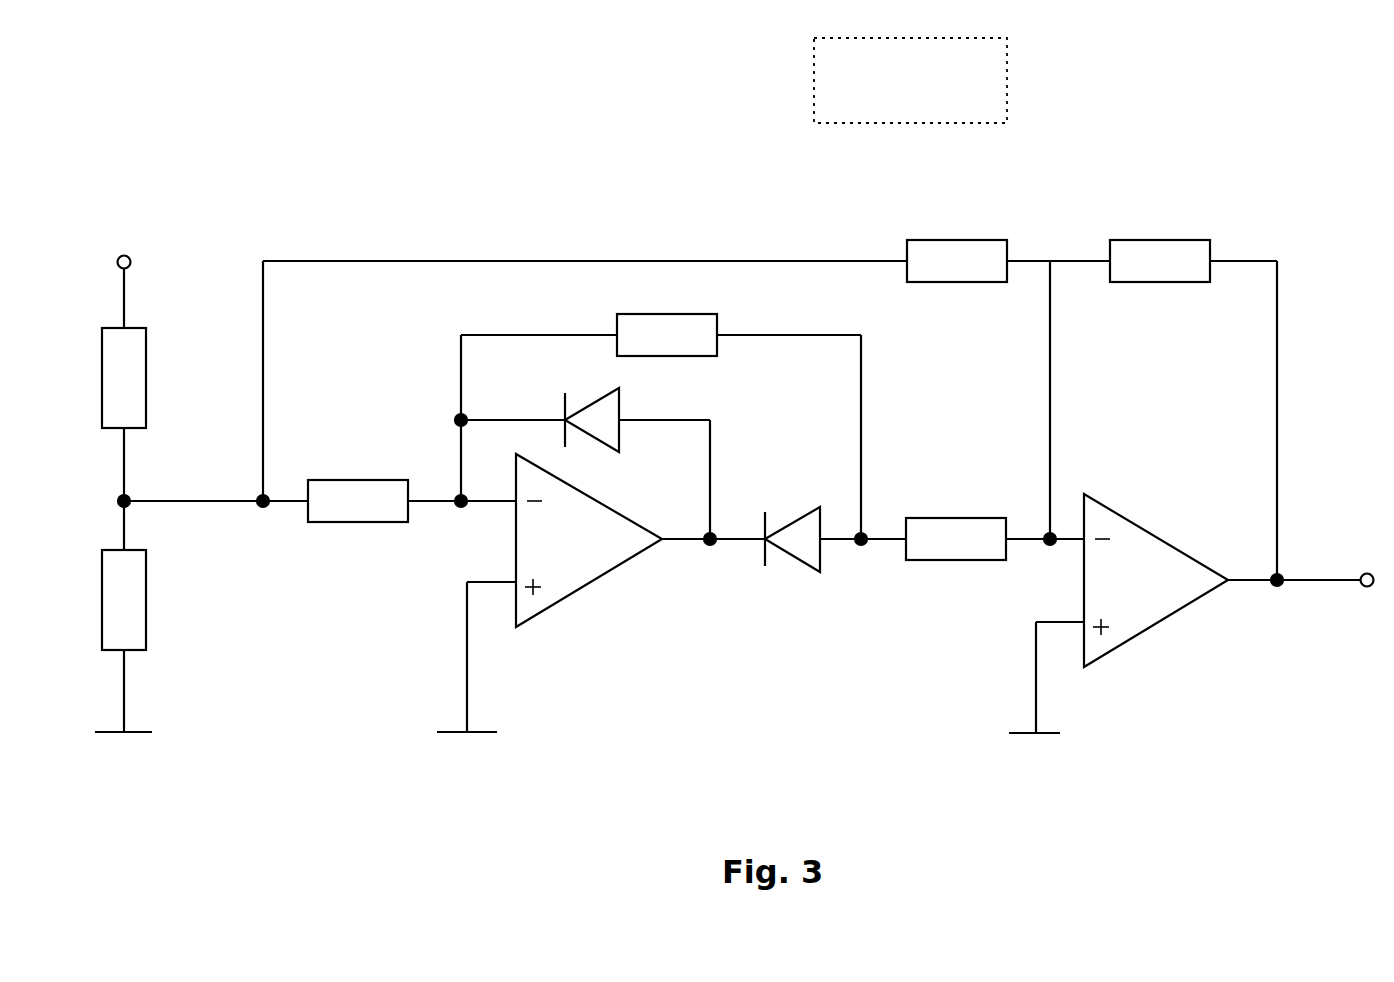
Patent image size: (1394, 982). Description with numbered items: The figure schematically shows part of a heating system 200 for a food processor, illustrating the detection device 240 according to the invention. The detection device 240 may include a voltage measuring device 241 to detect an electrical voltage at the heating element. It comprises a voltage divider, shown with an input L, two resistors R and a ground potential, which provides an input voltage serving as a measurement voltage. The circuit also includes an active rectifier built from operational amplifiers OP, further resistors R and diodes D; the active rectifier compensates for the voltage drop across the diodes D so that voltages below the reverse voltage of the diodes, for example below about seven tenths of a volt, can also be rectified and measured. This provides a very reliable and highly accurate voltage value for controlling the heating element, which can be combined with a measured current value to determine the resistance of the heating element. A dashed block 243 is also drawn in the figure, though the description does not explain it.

The heating system 200 is at (233, 95).
The detection device 240 is at (462, 137).
The voltage measuring device 241 is at (1258, 140).
The optional filter block 243 is at (910, 80).